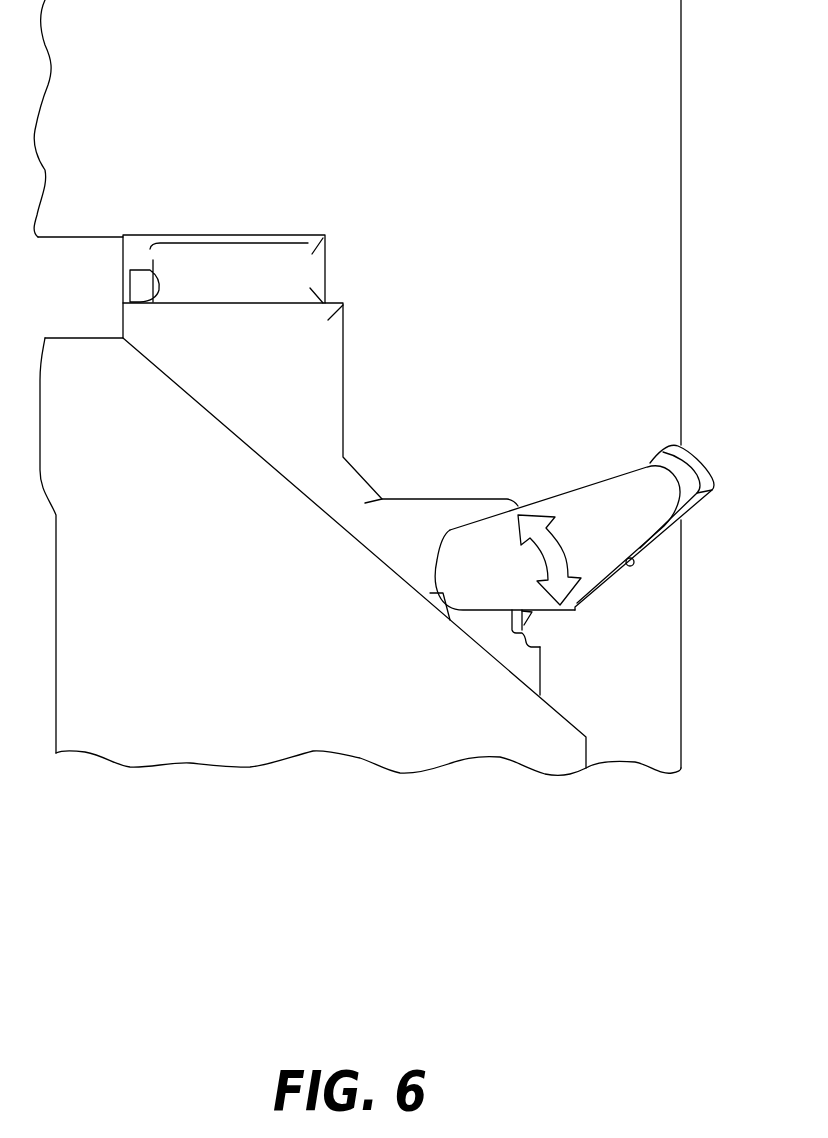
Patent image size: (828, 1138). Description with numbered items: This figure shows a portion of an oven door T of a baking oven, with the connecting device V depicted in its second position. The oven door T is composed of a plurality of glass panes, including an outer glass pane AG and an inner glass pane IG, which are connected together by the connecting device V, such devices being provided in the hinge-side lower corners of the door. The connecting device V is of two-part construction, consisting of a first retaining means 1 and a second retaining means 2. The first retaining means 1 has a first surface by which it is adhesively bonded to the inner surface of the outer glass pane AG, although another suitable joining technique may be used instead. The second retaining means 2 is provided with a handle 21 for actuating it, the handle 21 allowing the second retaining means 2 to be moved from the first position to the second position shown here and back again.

The first retaining means 1 is at (317, 390).
The second retaining means 2 is at (593, 545).
The handle 21 is at (693, 510).
The outer glass pane AG is at (517, 259).
The inner glass pane IG is at (297, 675).
The connecting device V is at (440, 494).
The oven door T is at (310, 772).